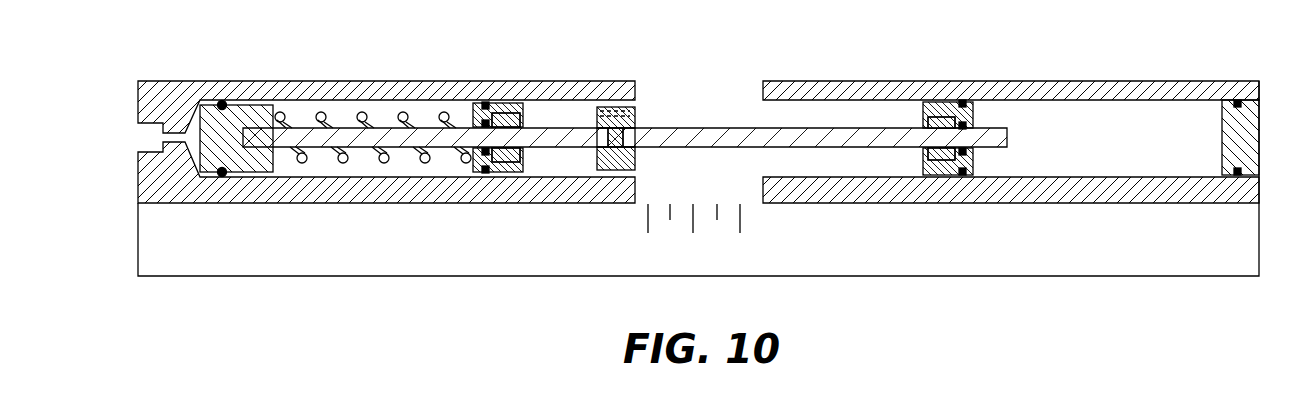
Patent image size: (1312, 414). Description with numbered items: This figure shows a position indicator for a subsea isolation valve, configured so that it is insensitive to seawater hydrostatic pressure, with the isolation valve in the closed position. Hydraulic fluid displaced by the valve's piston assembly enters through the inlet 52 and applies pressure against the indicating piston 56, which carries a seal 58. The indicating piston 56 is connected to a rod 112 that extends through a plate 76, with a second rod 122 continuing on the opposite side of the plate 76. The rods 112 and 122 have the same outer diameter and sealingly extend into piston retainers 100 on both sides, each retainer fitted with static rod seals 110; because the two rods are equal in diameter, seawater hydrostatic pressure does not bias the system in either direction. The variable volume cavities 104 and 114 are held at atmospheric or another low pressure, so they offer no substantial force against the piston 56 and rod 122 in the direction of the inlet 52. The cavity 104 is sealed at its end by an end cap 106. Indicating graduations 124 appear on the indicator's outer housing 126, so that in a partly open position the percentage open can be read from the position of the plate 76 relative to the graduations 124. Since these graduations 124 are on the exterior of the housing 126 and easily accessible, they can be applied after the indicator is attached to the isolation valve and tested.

The inlet 52 is at (143, 138).
The indicating piston 56 is at (257, 115).
The seal 58 is at (221, 101).
The plate 76 is at (635, 110).
The piston retainers 100 is at (497, 104).
The variable volume cavity 104 is at (1100, 137).
The end cap 106 is at (1257, 122).
The static rod seals 110 is at (965, 131).
The rod 112 is at (570, 135).
The variable volume cavity 114 is at (342, 115).
The rod 122 is at (827, 137).
The indicating graduations 124 is at (693, 204).
The outer housing 126 is at (1108, 276).